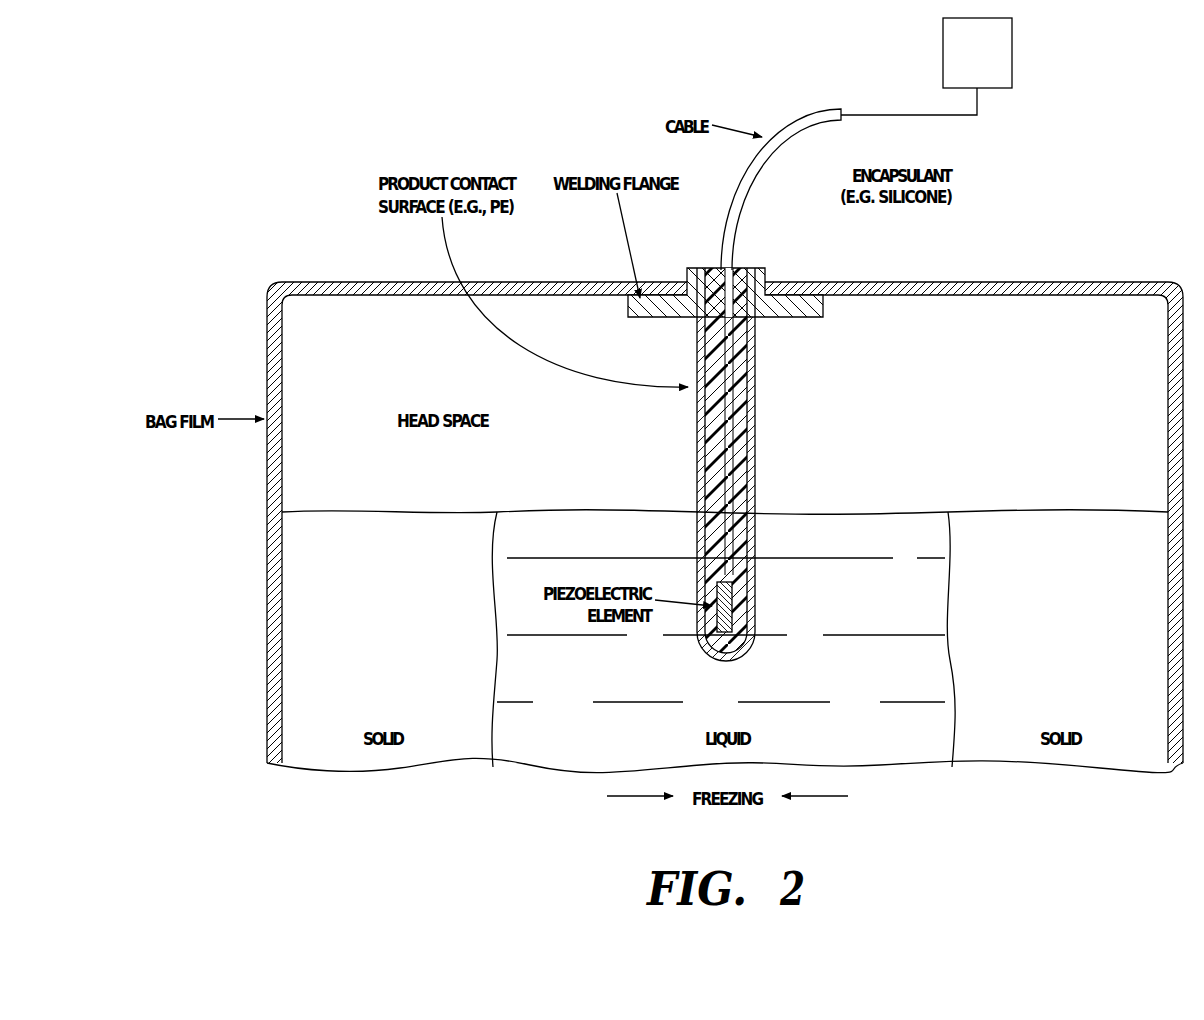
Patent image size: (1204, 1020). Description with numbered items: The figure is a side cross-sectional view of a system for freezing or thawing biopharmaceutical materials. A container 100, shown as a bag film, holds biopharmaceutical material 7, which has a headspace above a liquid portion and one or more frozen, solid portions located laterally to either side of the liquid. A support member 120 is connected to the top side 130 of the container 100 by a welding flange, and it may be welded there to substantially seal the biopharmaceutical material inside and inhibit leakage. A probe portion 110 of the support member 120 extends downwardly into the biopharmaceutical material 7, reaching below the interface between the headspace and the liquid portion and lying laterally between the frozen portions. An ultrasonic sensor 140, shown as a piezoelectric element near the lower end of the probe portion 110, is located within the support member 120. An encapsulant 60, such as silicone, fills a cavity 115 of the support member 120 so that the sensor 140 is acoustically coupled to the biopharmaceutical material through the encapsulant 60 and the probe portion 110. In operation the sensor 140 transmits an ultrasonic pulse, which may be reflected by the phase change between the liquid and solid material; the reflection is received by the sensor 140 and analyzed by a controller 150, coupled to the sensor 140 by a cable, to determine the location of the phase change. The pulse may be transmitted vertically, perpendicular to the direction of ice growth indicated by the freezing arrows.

The biopharmaceutical material 7 is at (393, 673).
The encapsulant 60 is at (752, 358).
The container 100 is at (268, 374).
The probe portion 110 is at (756, 413).
The cavity 115 is at (745, 481).
The support member 120 is at (697, 270).
The top side 130 is at (1100, 282).
The ultrasonic sensor 140 is at (737, 612).
The controller 150 is at (1000, 66).